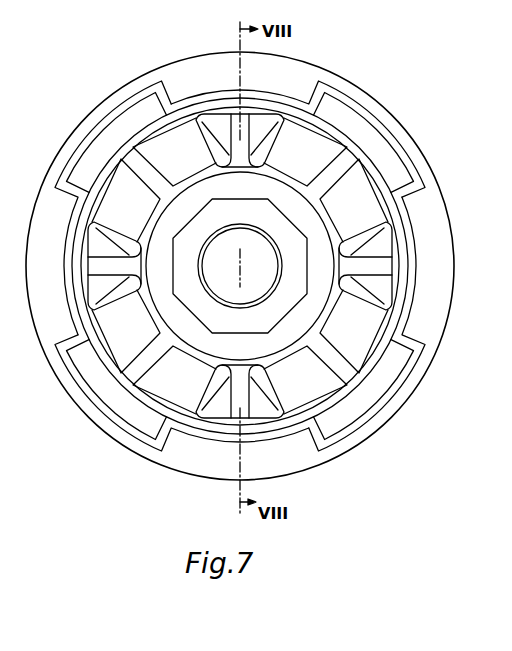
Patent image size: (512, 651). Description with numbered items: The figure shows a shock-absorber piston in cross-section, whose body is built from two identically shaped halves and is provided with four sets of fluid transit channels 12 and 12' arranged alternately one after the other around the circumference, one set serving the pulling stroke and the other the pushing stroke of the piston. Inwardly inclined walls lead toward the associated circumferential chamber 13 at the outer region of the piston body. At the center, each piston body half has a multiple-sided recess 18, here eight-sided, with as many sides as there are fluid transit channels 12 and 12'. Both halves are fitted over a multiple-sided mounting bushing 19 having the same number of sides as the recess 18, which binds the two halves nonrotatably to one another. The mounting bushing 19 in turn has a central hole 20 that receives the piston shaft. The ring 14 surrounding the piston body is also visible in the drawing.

The fluid transit channel 12 is at (240, 271).
The fluid transit channel 12' is at (257, 262).
The circumferential chamber 13 is at (295, 266).
The ring 14 is at (290, 266).
The multiple-sided recess 18 is at (341, 266).
The multiple-sided mounting bushing 19 is at (311, 247).
The central hole 20 is at (351, 253).